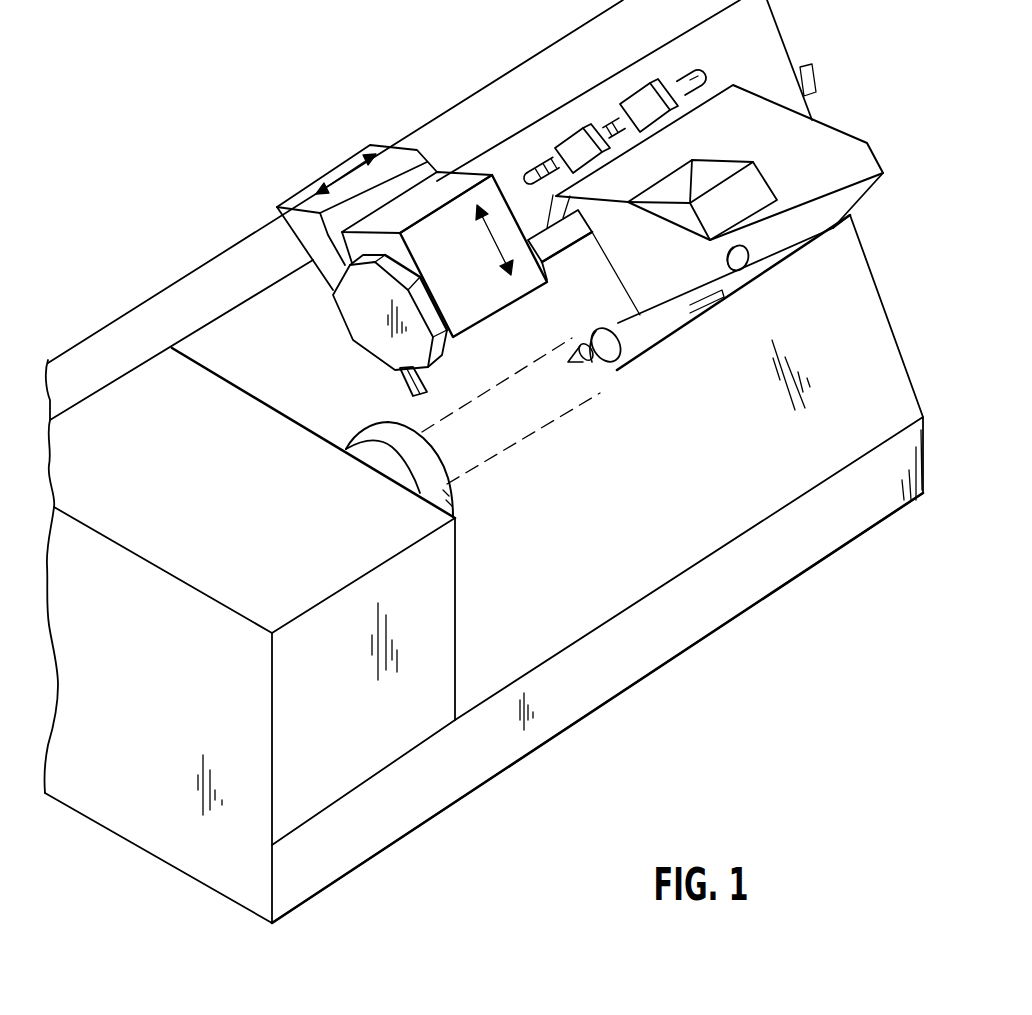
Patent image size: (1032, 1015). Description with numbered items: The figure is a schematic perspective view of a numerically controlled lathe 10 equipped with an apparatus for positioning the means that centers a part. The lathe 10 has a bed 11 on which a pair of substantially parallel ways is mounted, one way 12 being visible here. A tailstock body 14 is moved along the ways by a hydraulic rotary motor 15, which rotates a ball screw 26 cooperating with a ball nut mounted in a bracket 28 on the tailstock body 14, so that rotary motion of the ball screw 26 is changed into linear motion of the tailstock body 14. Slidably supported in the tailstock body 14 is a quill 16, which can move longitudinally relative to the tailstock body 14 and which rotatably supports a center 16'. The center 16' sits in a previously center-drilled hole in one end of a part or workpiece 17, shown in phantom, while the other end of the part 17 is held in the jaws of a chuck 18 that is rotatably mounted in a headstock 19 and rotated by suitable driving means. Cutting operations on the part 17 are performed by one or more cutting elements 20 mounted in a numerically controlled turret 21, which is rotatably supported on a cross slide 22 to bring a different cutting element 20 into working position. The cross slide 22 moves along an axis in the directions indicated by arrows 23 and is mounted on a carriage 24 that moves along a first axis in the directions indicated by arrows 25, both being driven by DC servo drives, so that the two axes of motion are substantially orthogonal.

The numerically controlled lathe 10 is at (580, 758).
The bed 11 is at (622, 690).
The way 12 is at (546, 236).
The tailstock body 14 is at (858, 133).
The hydraulic rotary motor 15 is at (692, 68).
The quill 16 is at (717, 294).
The center 16' is at (602, 378).
The part or workpiece 17 is at (500, 380).
The chuck 18 is at (458, 492).
The headstock 19 is at (458, 613).
The cutting element 20 is at (404, 382).
The numerically controlled turret 21 is at (360, 322).
The cross slide 22 is at (439, 170).
The arrows 23 is at (480, 218).
The carriage 24 is at (283, 238).
The arrows 25 is at (372, 158).
The ball screw 26 is at (540, 165).
The bracket 28 is at (572, 140).